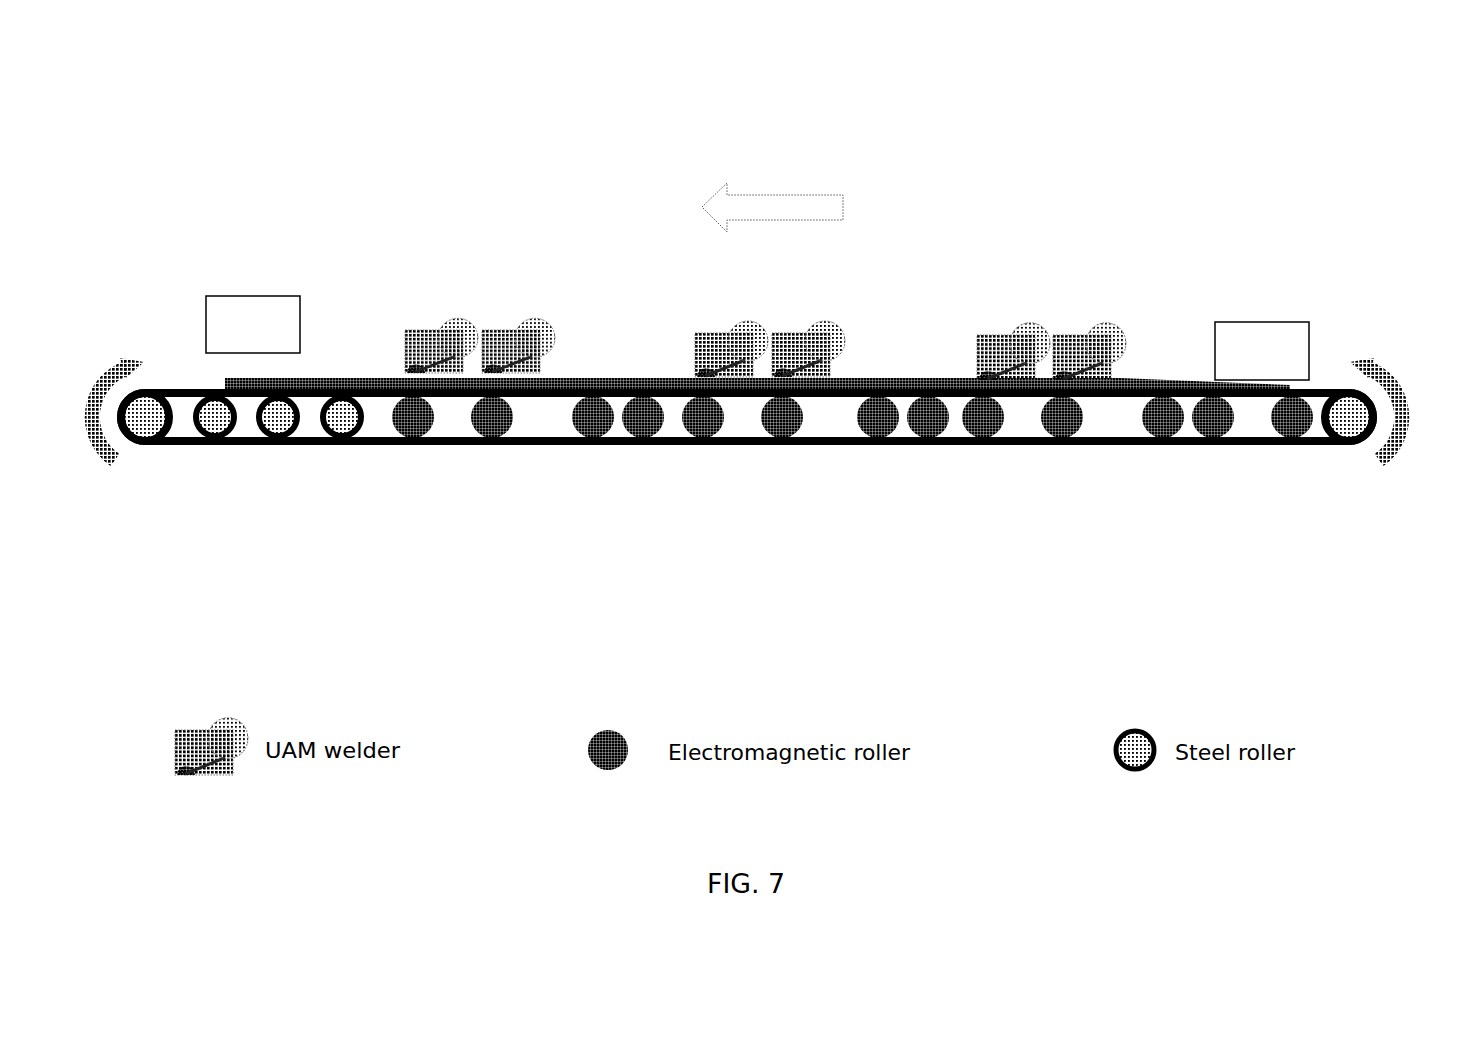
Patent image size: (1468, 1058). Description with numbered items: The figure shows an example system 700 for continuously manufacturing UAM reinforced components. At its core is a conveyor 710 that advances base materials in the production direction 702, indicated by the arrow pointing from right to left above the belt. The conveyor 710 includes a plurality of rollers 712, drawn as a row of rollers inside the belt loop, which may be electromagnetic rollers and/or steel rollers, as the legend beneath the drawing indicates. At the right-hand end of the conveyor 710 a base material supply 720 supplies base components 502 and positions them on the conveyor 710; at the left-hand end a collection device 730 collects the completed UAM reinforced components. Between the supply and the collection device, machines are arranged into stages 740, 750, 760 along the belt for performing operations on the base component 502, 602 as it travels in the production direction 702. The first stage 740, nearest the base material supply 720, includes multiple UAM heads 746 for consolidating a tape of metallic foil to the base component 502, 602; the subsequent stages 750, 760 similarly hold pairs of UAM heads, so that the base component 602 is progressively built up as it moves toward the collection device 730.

The system 700 is at (548, 133).
The production direction 702 is at (793, 197).
The collection device 730 is at (268, 296).
The base component 602 is at (323, 377).
The UAM heads 746 is at (998, 335).
The base component 502 is at (1173, 387).
The base material supply 720 is at (1297, 322).
The conveyor 710 is at (1333, 390).
The rollers 712 is at (1292, 445).
The stage 760 is at (375, 475).
The stage 750 is at (847, 472).
The first stage 740 is at (1050, 351).